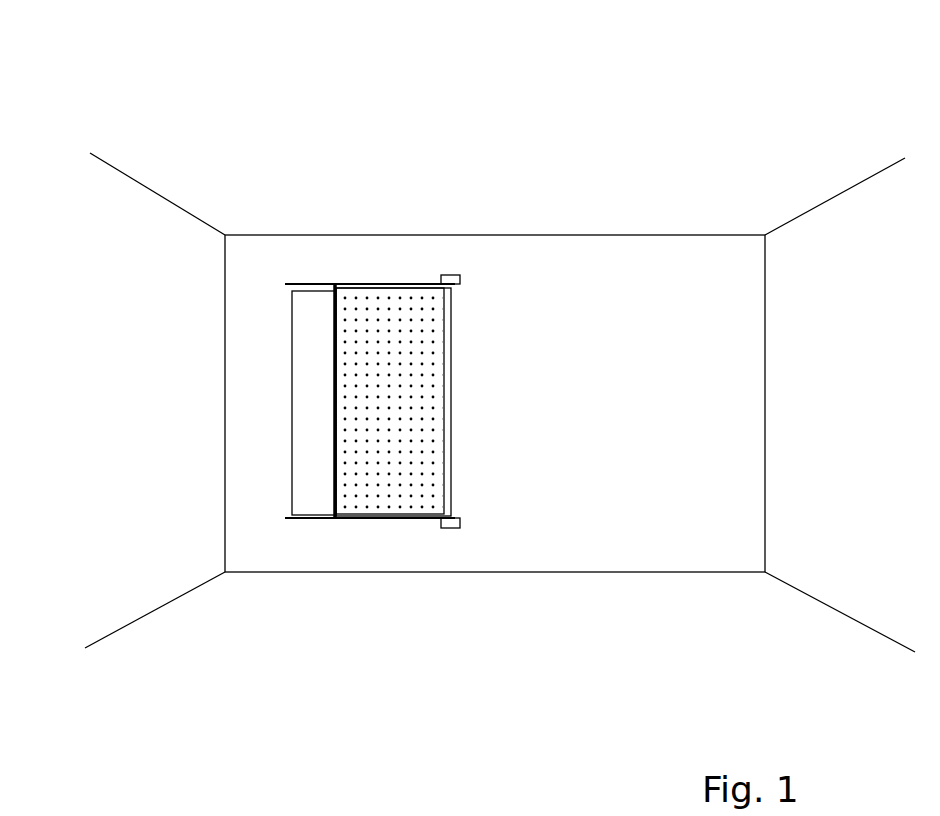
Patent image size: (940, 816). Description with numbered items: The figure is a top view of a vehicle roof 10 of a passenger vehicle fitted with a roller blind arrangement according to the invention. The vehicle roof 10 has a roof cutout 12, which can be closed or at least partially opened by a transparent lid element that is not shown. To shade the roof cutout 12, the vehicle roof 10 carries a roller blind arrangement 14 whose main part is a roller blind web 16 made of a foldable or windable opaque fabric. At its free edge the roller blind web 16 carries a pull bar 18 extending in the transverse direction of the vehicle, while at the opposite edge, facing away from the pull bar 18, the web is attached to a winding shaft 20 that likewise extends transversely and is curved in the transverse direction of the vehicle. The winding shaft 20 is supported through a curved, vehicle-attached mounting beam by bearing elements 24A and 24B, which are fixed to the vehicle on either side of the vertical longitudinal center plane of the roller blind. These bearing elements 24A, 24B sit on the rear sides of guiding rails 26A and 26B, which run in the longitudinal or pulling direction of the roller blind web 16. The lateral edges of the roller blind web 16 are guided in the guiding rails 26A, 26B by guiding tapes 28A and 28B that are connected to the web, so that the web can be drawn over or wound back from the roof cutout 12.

The vehicle roof 10 is at (500, 336).
The roof cutout 12 is at (292, 397).
The roller blind arrangement 14 is at (420, 276).
The roller blind web 16 is at (365, 349).
The pull bar 18 is at (337, 433).
The winding shaft 20 is at (452, 403).
The bearing element 24A is at (460, 529).
The bearing element 24B is at (460, 275).
The guiding rail 26A is at (312, 519).
The guiding rail 26B is at (302, 283).
The guiding tape 28A is at (382, 519).
The guiding tape 28B is at (370, 283).